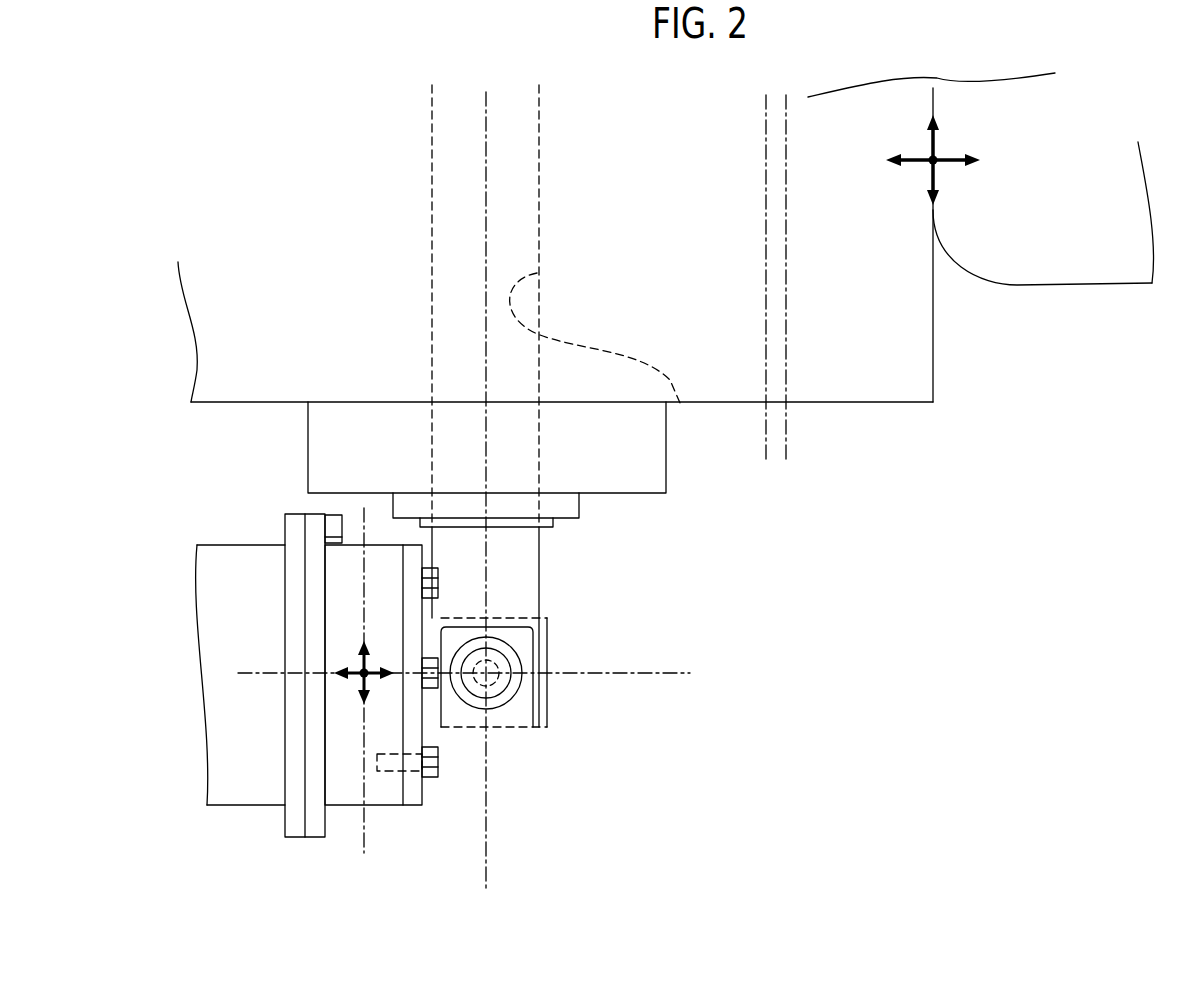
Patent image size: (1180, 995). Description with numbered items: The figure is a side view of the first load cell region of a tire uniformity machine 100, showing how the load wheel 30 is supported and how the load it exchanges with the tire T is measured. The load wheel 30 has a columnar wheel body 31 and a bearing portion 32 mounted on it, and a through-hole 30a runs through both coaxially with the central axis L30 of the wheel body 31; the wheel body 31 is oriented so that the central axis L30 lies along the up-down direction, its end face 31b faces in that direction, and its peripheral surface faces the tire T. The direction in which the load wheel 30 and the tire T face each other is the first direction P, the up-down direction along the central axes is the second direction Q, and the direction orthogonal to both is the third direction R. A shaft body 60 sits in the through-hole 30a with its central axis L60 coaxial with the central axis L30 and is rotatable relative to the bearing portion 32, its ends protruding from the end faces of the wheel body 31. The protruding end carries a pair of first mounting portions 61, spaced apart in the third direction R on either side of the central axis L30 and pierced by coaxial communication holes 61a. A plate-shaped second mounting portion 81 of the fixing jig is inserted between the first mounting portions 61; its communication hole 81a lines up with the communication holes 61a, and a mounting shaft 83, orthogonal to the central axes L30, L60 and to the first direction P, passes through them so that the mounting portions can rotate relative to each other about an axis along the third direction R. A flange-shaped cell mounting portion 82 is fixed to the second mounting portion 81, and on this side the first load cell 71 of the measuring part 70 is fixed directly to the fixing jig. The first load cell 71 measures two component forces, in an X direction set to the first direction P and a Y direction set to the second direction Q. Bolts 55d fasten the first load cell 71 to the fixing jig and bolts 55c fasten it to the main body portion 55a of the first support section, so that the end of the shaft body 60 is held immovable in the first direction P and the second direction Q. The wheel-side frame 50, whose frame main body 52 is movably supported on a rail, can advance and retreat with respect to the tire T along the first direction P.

The machine tool / processing apparatus 100 is at (742, 795).
The load wheel 30 is at (876, 410).
The through-hole 30a is at (680, 403).
The wheel body 31 is at (820, 372).
The end face 31b is at (905, 403).
The bearing portion 32 is at (635, 485).
The wheel-side frame 50 is at (240, 800).
The frame main body 52 is at (267, 800).
The main body portion 55a is at (240, 640).
The bolts 55c is at (332, 523).
The bolts 55d is at (437, 583).
The shaft body 60 is at (540, 590).
The first mounting portion 61 is at (523, 640).
The communication hole 61a is at (495, 683).
The measuring part 70 is at (368, 651).
The first load cell 71 is at (350, 555).
The second mounting portion 81 is at (505, 617).
The communication hole 81a is at (583, 701).
The cell mounting portion 82 is at (415, 787).
The mounting shaft 83 is at (499, 671).
The central axis L30 is at (540, 504).
The central axis L60 is at (487, 855).
The tire T is at (1070, 265).
The first direction P is at (950, 163).
The second direction Q is at (935, 142).
The third direction R is at (932, 158).
The X direction X is at (372, 678).
The Y direction Y is at (372, 656).